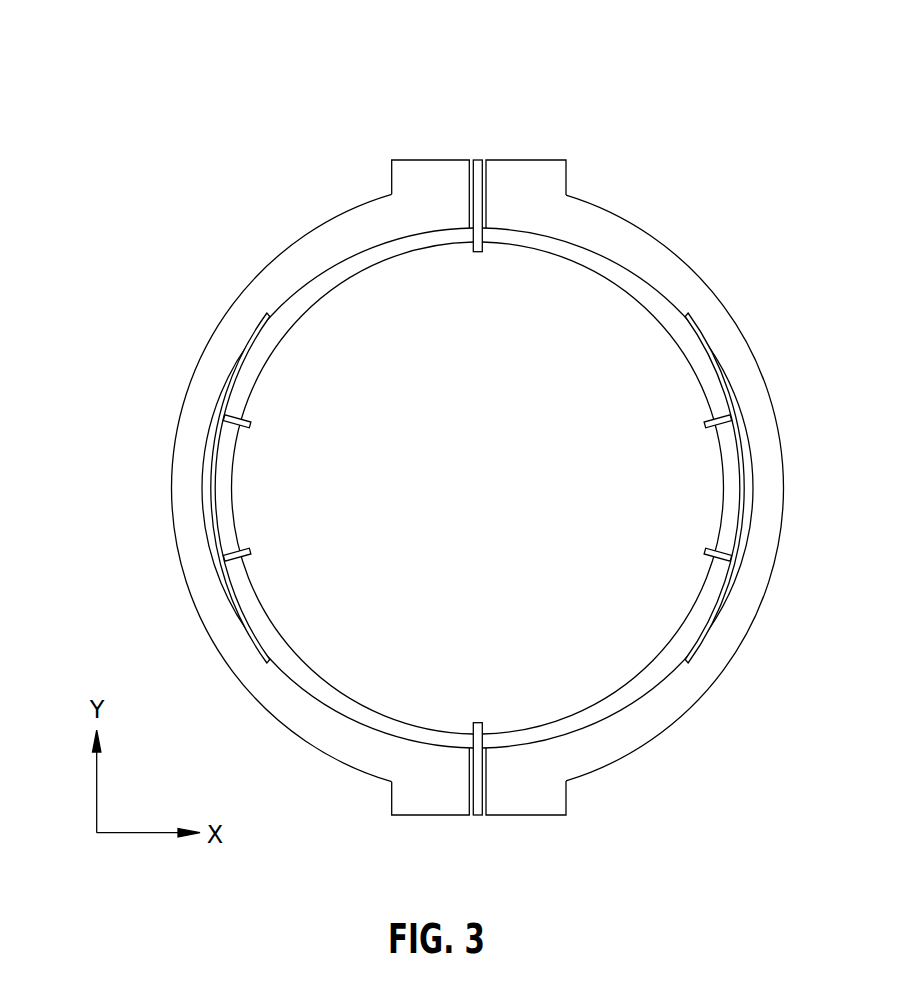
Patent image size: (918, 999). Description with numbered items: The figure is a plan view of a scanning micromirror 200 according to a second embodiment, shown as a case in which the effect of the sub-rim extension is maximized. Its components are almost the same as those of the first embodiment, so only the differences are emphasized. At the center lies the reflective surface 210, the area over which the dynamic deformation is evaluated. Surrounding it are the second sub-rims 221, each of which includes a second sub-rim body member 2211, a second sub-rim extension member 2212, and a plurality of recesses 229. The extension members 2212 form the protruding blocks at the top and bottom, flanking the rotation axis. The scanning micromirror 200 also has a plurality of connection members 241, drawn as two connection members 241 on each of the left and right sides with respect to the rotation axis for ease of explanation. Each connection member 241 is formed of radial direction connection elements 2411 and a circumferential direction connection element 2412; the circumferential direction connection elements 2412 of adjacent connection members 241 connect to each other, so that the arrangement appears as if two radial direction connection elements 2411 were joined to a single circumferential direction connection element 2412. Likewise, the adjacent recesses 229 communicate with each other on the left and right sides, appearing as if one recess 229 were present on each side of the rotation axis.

The scanning micromirror 200 is at (460, 28).
The reflective surface 210 is at (622, 330).
The second sub-rim 221 is at (468, 100).
The second sub-rim body member 2211 is at (363, 215).
The second sub-rim extension member 2212 is at (428, 170).
The recess 229 is at (235, 368).
The connection member 241 is at (102, 413).
The radial direction connection element 2411 is at (230, 428).
The circumferential direction connection element 2412 is at (218, 529).